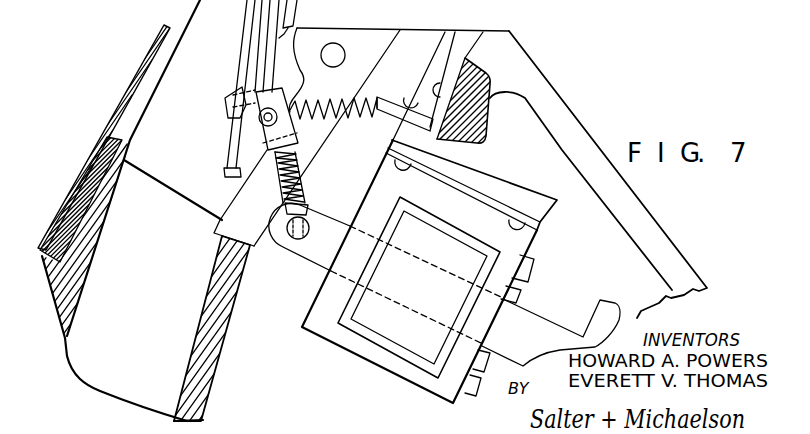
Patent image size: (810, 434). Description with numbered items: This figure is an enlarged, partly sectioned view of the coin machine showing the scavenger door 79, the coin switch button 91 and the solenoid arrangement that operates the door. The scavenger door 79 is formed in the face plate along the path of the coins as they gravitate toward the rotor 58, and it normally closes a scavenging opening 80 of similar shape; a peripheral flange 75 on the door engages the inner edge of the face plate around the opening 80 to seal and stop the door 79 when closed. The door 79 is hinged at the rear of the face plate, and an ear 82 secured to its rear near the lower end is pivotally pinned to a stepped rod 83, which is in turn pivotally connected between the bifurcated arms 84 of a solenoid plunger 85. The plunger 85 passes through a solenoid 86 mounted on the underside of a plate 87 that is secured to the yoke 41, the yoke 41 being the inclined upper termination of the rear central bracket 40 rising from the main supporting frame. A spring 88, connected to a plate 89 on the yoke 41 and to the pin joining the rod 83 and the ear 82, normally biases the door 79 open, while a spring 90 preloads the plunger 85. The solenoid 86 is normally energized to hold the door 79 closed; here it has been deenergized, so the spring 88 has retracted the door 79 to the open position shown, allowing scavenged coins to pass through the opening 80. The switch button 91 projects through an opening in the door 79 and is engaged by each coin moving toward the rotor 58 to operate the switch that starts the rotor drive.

The rear central bracket 40 is at (650, 227).
The yoke 41 is at (492, 83).
The rotor 58 is at (130, 87).
The peripheral flange 75 is at (230, 187).
The scavenger door 79 is at (248, 1).
The scavenging opening 80 is at (125, 141).
The ear 82 is at (365, 52).
The stepped rod 83 is at (262, 146).
The bifurcated arms 84 is at (317, 250).
The solenoid plunger 85 is at (530, 318).
The solenoid 86 is at (513, 245).
The plate 87 is at (487, 178).
The spring 88 is at (285, 90).
The plate 89 is at (409, 103).
The spring 90 is at (300, 190).
The switch button 91 is at (228, 83).